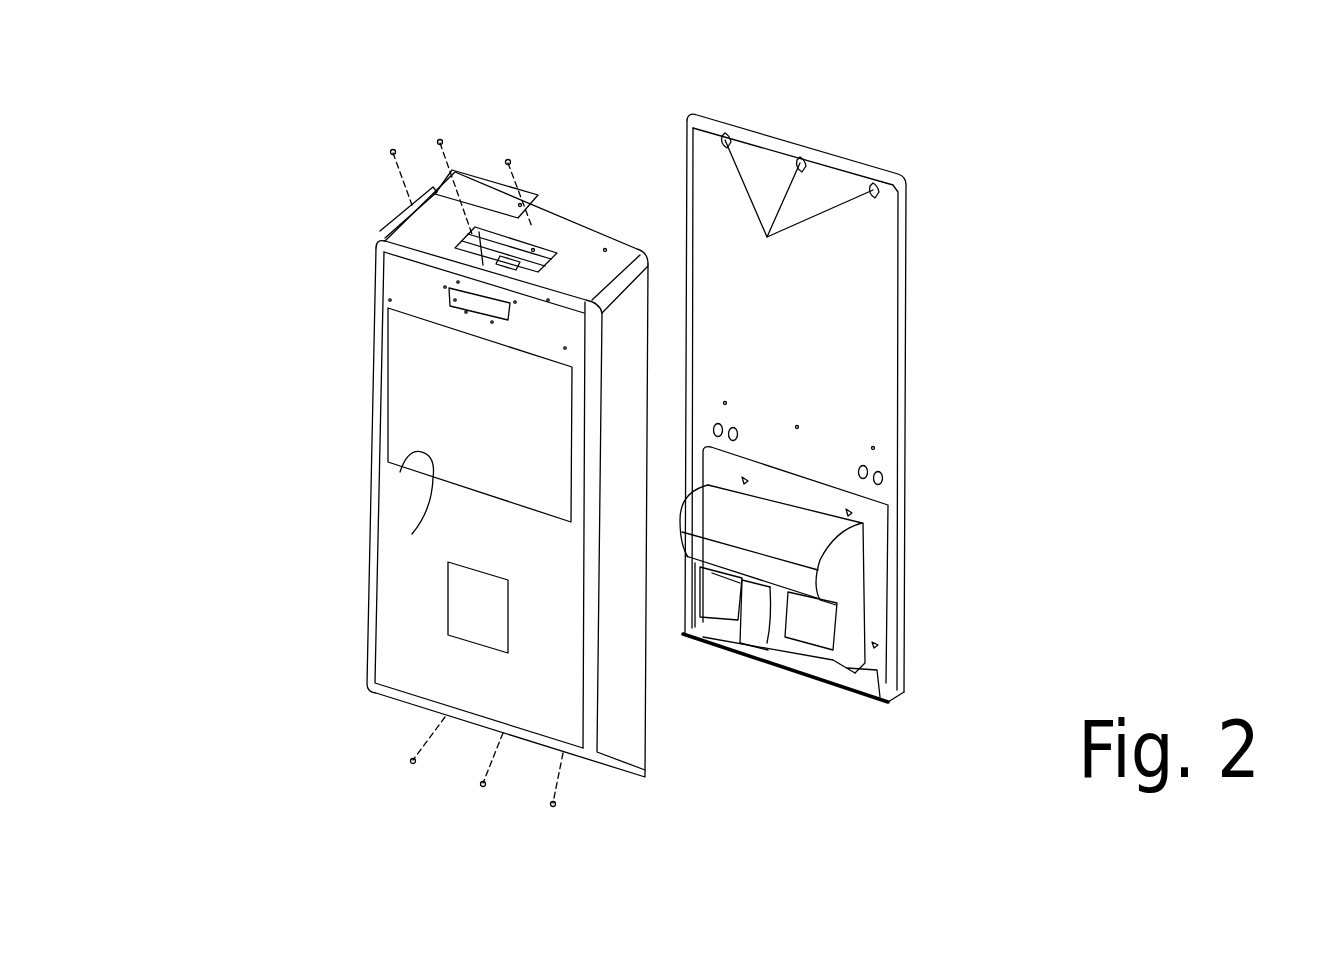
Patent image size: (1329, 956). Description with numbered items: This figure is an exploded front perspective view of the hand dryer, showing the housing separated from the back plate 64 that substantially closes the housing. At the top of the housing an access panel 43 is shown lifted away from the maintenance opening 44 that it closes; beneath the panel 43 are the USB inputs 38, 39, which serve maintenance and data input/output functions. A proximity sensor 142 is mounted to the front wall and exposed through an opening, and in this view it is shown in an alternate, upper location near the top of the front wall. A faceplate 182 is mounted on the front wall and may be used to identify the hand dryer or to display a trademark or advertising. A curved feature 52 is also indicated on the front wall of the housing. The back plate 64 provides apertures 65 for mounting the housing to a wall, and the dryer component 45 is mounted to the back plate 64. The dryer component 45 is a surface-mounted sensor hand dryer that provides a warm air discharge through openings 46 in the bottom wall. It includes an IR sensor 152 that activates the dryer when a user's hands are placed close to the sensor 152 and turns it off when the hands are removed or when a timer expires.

The USB input 38 is at (492, 261).
The access panel 43 is at (470, 178).
The maintenance opening 44 is at (546, 256).
The USB input 39 is at (508, 264).
The proximity sensor 142 is at (455, 302).
The flap 52 is at (412, 508).
The faceplate 182 is at (490, 622).
The back plate 64 is at (878, 350).
The apertures 65 is at (800, 196).
The dryer component 45 is at (762, 533).
The openings 46 is at (797, 672).
The IR sensor 152 is at (817, 672).